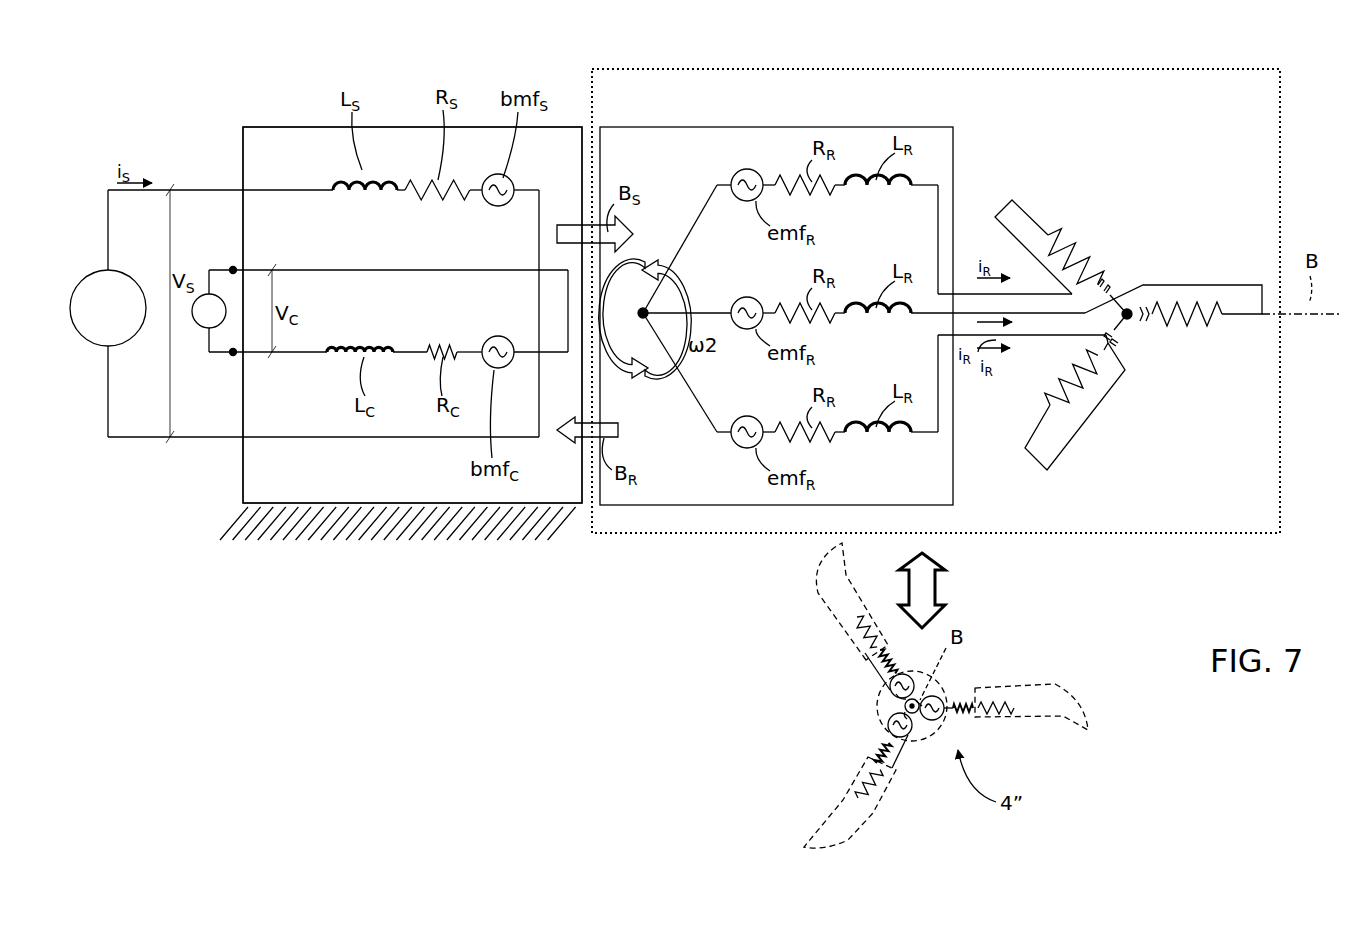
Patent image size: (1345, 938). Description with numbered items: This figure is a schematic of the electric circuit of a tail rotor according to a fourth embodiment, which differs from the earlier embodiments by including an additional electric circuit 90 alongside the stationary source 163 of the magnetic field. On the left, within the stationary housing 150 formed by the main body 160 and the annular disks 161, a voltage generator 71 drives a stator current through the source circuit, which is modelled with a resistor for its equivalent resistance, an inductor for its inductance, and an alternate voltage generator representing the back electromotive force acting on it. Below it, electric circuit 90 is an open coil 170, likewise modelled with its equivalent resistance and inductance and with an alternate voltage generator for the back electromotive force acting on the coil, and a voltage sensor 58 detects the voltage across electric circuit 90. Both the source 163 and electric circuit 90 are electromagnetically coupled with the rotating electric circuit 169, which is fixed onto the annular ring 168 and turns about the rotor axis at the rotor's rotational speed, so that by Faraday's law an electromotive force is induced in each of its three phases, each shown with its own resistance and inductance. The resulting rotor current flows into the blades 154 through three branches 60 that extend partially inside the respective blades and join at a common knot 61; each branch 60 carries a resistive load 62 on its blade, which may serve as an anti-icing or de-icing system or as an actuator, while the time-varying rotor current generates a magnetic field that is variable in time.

The voltage generator 71 is at (100, 286).
The sensor 58 is at (206, 326).
The electric circuit 90 is at (289, 374).
The main body 160 is at (260, 127).
The annular disks 161 is at (412, 315).
The source 163 is at (291, 156).
The open coil 170 is at (373, 438).
The hollow housing 150 is at (313, 516).
The electric circuit 169 is at (923, 104).
The annular ring 168 is at (1186, 100).
The branches 60 is at (1076, 198).
The common knot 61 is at (1129, 322).
The resistive load 62 is at (1086, 256).
The blades 154 is at (848, 636).